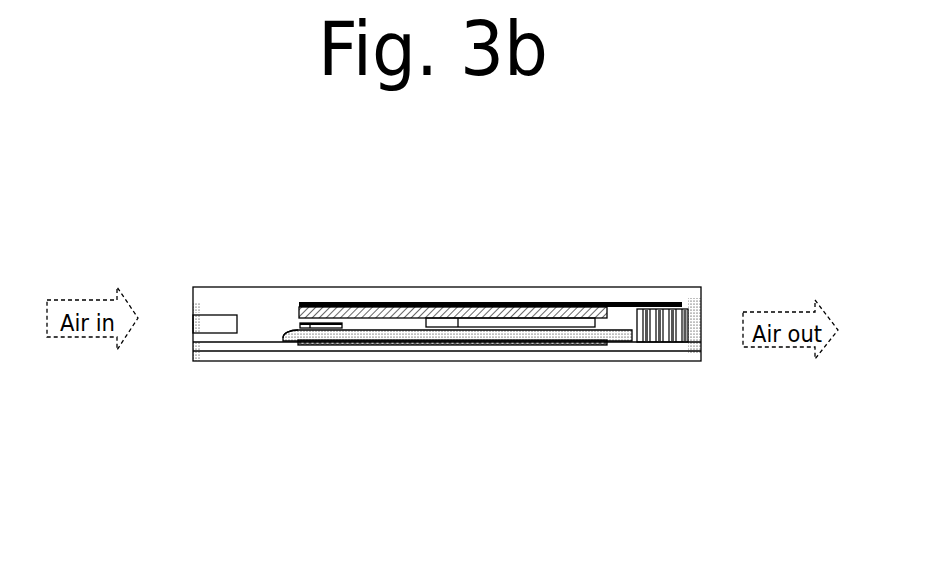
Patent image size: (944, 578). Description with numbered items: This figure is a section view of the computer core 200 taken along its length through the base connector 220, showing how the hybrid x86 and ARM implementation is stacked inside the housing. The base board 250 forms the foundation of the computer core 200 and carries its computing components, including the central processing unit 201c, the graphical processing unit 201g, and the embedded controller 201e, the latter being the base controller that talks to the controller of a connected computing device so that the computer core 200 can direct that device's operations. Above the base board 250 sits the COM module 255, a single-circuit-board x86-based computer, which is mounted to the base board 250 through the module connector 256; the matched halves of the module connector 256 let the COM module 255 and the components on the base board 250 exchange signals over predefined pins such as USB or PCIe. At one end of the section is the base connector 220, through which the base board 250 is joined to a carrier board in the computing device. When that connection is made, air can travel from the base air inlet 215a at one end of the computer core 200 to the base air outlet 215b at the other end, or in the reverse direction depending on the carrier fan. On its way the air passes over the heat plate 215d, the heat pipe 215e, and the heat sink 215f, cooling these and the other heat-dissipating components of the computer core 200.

The computer core 200 is at (480, 287).
The base air inlet 215a is at (198, 305).
The base air outlet 215b is at (700, 300).
The heat plate 215d is at (557, 312).
The heat pipe 215e is at (610, 305).
The heat sink 215f is at (662, 330).
The base connector 220 is at (238, 322).
The base board 250 is at (228, 351).
The COM module 255 is at (286, 331).
The module connector 256 is at (577, 344).
The central processing unit 201c is at (508, 330).
The embedded controller 201e is at (312, 328).
The graphical processing unit 201g is at (398, 330).